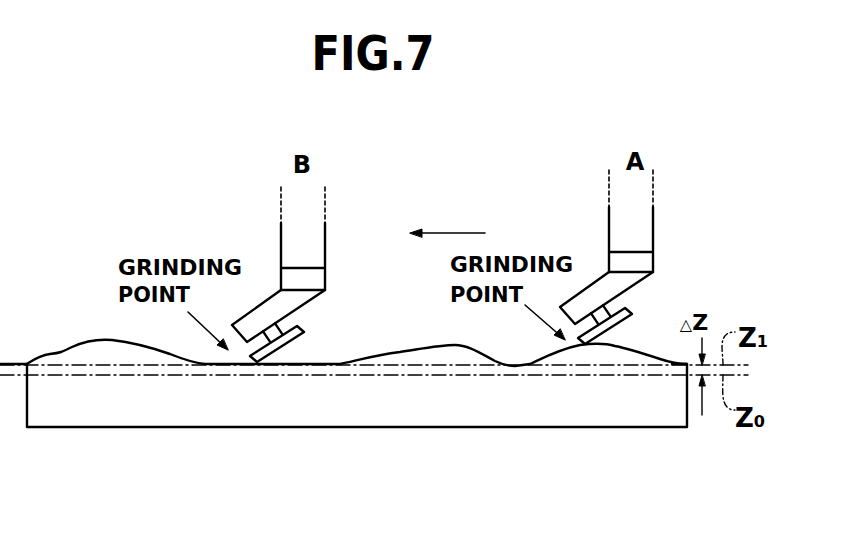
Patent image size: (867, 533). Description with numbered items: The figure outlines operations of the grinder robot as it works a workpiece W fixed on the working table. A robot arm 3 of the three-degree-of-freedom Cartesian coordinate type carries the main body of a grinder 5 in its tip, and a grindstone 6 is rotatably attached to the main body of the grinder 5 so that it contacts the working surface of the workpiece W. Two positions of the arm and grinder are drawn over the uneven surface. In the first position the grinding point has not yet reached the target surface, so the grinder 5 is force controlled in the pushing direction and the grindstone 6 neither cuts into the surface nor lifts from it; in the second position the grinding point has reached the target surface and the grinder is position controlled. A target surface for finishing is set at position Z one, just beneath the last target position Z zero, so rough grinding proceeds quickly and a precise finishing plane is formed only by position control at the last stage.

The robot arm 3 is at (325, 255).
The grinder 5 is at (300, 306).
The grindstone 6 is at (303, 331).
The workpiece W is at (538, 405).